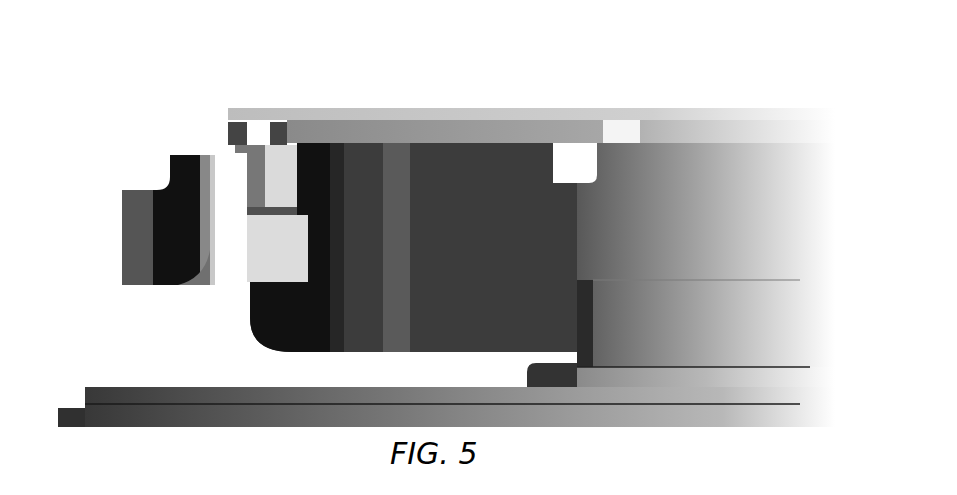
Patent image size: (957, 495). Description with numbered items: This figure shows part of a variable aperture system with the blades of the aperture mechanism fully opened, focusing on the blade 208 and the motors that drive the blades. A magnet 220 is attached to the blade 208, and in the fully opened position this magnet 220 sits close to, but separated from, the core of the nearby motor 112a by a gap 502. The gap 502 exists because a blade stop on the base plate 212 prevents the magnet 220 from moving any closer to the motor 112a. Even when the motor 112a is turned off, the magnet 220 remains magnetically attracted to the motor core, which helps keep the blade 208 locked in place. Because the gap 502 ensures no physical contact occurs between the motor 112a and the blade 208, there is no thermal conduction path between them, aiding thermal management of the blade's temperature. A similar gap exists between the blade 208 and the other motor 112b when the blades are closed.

The motor 112a is at (165, 158).
The motor 112b is at (676, 262).
The blade 208 is at (480, 100).
The base plate 212 is at (376, 128).
The magnet 220 is at (268, 172).
The gap 502 is at (250, 222).